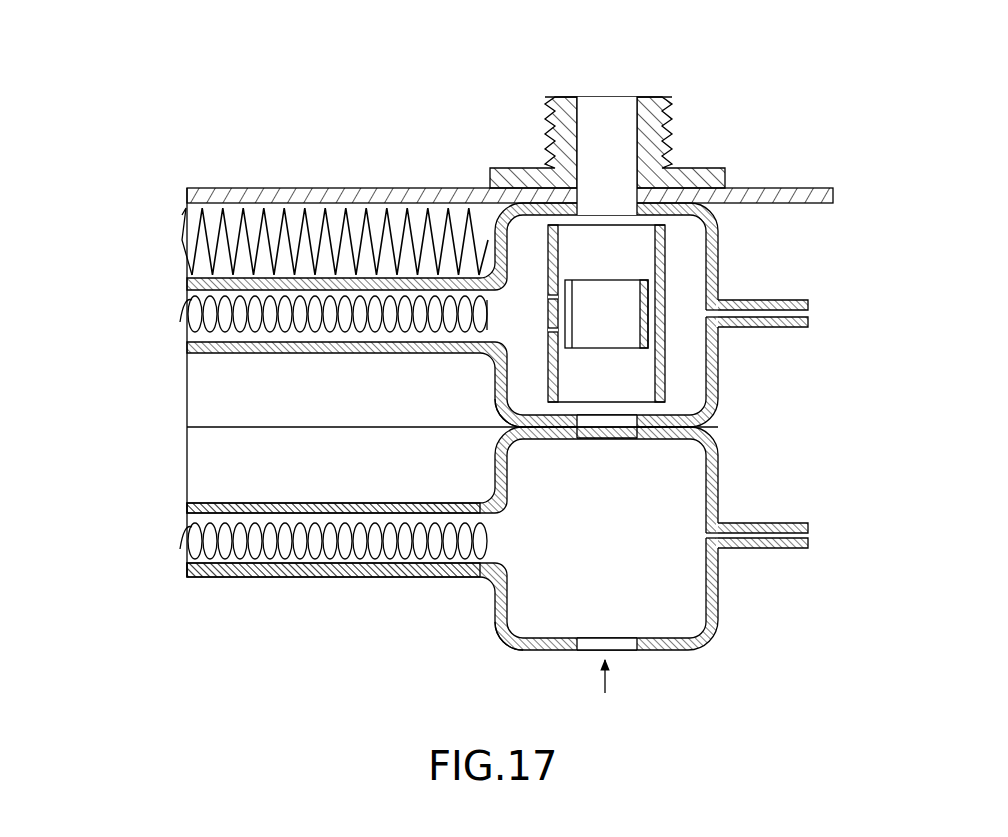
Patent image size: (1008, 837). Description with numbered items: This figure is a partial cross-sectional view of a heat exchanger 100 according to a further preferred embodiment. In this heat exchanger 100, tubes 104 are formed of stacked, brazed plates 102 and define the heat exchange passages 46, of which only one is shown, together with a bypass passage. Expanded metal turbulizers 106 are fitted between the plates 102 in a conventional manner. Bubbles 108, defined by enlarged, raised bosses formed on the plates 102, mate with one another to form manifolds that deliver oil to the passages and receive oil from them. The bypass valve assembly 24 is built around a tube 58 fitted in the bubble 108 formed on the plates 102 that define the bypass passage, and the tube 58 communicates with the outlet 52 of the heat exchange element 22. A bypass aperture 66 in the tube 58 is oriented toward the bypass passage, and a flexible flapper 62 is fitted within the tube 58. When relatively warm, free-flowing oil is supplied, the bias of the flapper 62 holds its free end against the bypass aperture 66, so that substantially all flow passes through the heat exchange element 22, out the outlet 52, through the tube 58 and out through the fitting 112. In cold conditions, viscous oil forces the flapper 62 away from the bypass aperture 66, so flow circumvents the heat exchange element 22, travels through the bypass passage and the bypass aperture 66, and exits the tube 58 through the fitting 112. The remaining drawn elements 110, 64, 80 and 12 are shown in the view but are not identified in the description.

The heat exchanger 100 is at (247, 95).
The bypass valve assembly 24 is at (100, 200).
The heat exchange element 22 is at (114, 660).
The wave spring 110 is at (165, 240).
The fitting 112 is at (545, 125).
The bore 64 is at (610, 243).
The tube 58 is at (662, 252).
The flapper 62 is at (660, 355).
The bypass aperture 66 is at (540, 310).
The piston 80 is at (572, 356).
The expanded metal turbulizers 106 is at (170, 320).
The tube passage 12 is at (493, 320).
The bubbles 108 is at (478, 363).
The outlet 52 is at (615, 445).
The heat exchange passages 46 is at (497, 540).
The plates 102 is at (738, 300).
The tubes 104 is at (838, 253).